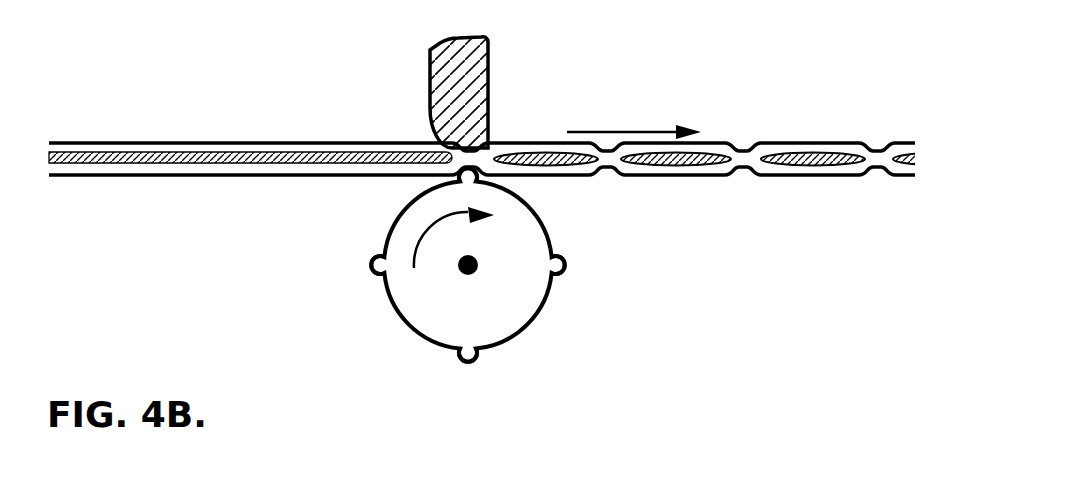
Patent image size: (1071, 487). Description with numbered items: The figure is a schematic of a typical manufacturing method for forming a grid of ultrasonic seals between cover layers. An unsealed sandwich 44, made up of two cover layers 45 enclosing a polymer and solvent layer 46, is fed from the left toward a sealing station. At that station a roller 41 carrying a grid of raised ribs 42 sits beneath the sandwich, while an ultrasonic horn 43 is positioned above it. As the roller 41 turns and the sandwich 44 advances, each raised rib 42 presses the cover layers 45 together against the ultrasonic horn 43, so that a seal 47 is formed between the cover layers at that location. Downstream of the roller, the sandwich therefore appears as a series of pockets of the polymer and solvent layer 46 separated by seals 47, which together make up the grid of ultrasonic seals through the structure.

The roller 41 is at (517, 277).
The grid of raised ribs 42 is at (565, 264).
The ultrasonic horn 43 is at (478, 64).
The unsealed sandwich 44 is at (523, 193).
The cover layers 45 is at (135, 148).
The polymer and solvent layer 46 is at (273, 152).
The seal 47 is at (747, 167).